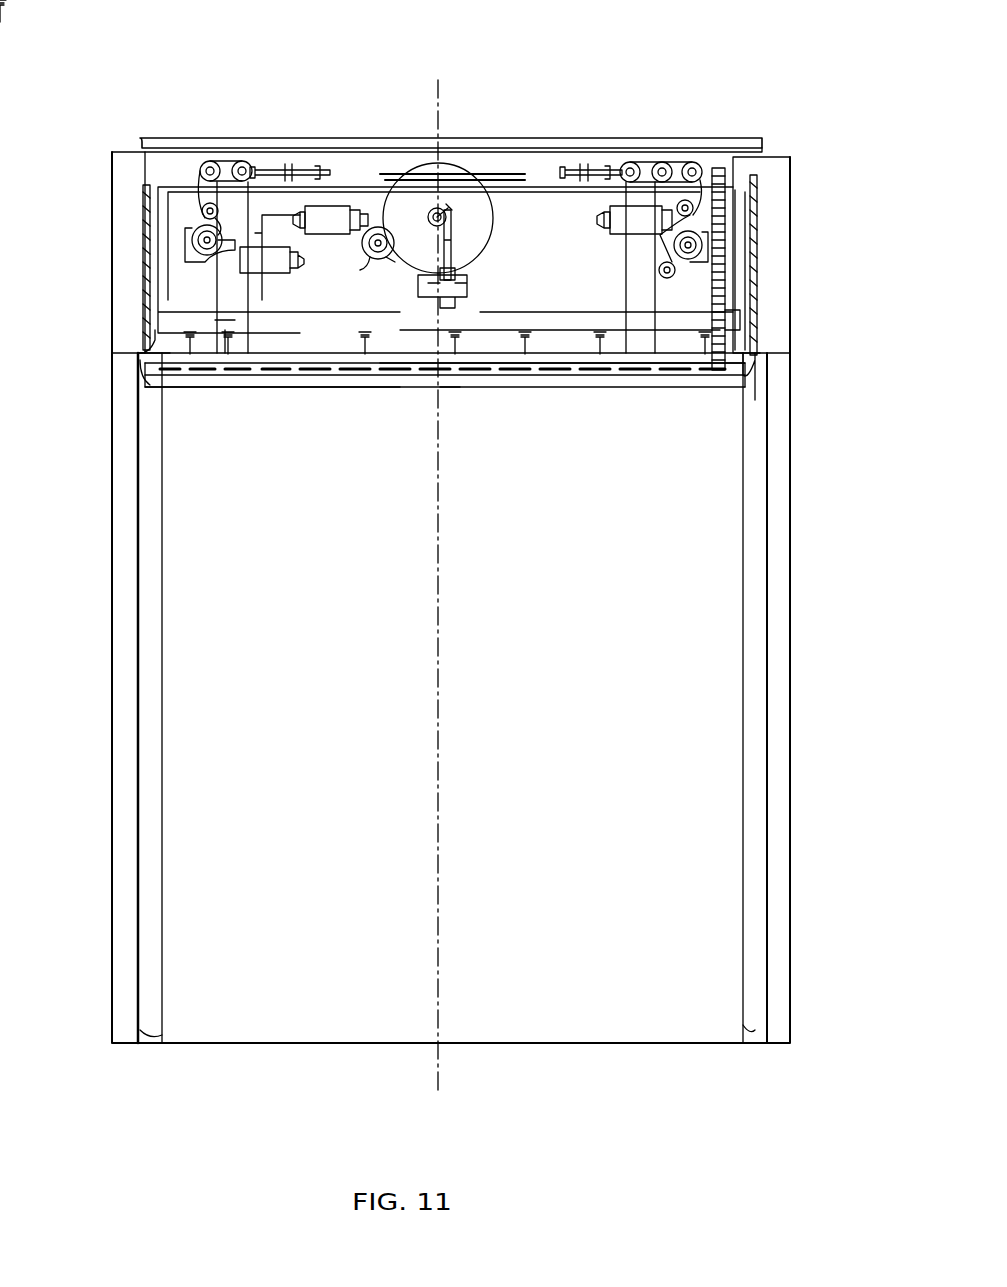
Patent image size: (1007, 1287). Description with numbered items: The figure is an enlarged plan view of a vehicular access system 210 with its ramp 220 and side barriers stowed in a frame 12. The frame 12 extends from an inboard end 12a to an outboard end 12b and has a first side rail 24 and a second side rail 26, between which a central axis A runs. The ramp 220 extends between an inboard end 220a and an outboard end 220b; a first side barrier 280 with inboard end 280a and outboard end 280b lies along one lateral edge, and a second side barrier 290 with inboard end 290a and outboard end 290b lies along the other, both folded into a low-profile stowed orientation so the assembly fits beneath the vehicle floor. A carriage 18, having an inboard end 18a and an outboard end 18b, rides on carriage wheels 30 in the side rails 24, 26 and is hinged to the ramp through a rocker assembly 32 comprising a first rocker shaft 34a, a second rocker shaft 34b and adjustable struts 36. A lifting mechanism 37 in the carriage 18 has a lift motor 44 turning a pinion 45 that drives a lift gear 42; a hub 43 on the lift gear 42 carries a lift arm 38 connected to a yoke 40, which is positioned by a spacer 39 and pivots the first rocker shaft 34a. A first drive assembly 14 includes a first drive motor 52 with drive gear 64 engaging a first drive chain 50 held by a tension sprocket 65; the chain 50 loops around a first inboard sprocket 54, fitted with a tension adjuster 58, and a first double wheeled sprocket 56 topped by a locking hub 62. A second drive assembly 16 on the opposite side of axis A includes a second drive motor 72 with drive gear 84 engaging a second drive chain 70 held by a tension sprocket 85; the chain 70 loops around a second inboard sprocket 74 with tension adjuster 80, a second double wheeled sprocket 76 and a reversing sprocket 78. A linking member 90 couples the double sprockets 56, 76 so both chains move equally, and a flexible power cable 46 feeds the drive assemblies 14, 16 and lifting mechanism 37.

The vehicular access system 210 is at (132, 88).
The frame 12 is at (112, 440).
The inboard end 12a is at (385, 147).
The outboard end 12b is at (780, 1043).
The first drive assembly 14 is at (262, 355).
The second drive assembly 16 is at (618, 278).
The carriage 18 is at (147, 285).
The inboard end 18a is at (765, 160).
The outboard end 18b is at (757, 330).
The first side rail 24 is at (118, 675).
The second side rail 26 is at (785, 692).
The carriage wheels 30 is at (145, 232).
The rocker assembly 32 is at (300, 375).
The first rocker shaft 34a is at (598, 370).
The second rocker shaft 34b is at (392, 370).
The struts 36 is at (193, 356).
The lifting mechanism 37 is at (388, 260).
The lift arm 38 is at (452, 242).
The spacer 39 is at (456, 276).
The yoke 40 is at (458, 300).
The lift gear 42 is at (493, 211).
The hub 43 is at (460, 178).
The lift motor 44 is at (296, 235).
The pinion 45 is at (362, 252).
The power cable 46 is at (727, 292).
The first drive chain 50 is at (228, 365).
The first drive motor 52 is at (280, 272).
The first inboard sprocket 54 is at (242, 160).
The first double wheeled sprocket 56 is at (210, 160).
The tension adjuster 58 is at (310, 167).
The locking hub 62 is at (205, 178).
The drive gear 64 is at (190, 242).
The tension sprocket 65 is at (200, 205).
The second drive chain 70 is at (633, 360).
The second drive motor 72 is at (608, 232).
The second inboard sprocket 74 is at (628, 162).
The second double wheeled sprocket 76 is at (662, 162).
The reversing sprocket 78 is at (696, 162).
The tension adjuster 80 is at (590, 167).
The drive gear 84 is at (704, 258).
The tension sprocket 85 is at (692, 215).
The linking member 90 is at (498, 172).
The ramp 220 is at (508, 731).
The inboard end 220a is at (462, 388).
The outboard end 220b is at (308, 1043).
The first side barrier 280 is at (750, 678).
The inboard end 280a is at (755, 395).
The outboard end 280b is at (755, 1030).
The second side barrier 290 is at (150, 675).
The inboard end 290a is at (142, 365).
The outboard end 290b is at (152, 1030).
The central axis A is at (440, 92).